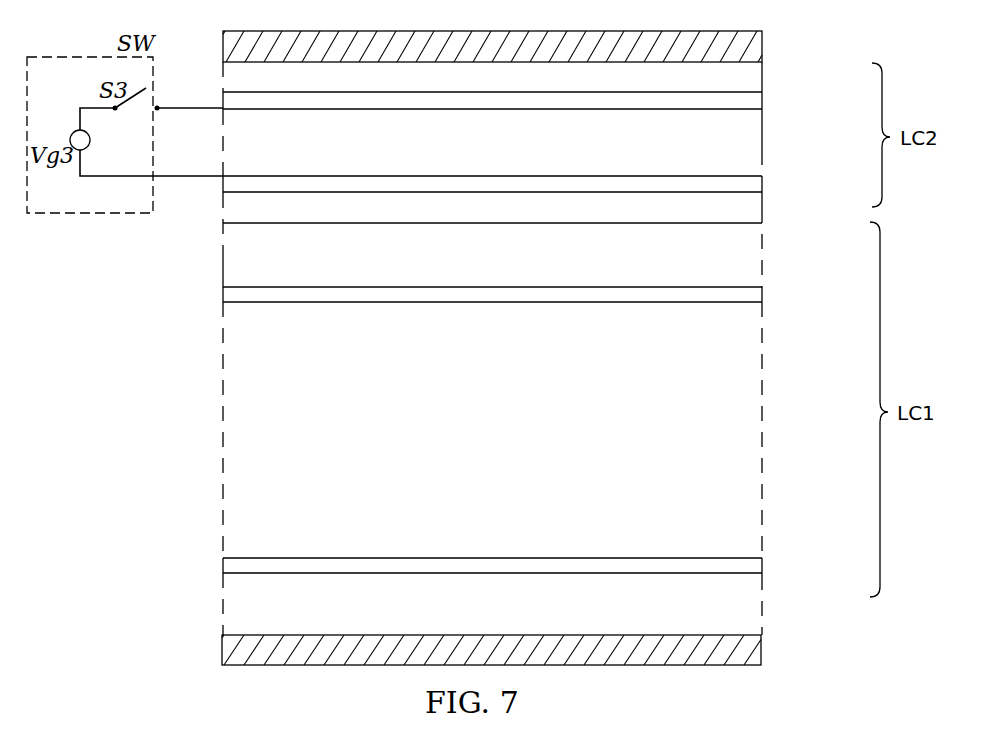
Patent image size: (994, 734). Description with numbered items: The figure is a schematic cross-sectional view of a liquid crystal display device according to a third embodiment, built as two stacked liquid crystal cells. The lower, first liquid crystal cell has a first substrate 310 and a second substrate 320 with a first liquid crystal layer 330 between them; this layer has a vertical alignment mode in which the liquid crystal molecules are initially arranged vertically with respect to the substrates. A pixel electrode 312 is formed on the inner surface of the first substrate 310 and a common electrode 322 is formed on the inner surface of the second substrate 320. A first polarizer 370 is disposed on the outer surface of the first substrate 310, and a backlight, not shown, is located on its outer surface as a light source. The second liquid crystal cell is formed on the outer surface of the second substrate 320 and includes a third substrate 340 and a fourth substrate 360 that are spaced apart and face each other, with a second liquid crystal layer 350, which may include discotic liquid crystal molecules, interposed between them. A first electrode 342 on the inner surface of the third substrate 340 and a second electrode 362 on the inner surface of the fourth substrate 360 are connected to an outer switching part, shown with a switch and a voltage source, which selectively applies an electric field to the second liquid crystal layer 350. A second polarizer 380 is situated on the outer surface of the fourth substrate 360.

The second polarizer 380 is at (752, 45).
The fourth substrate 360 is at (752, 83).
The second electrode 362 is at (752, 106).
The second liquid crystal layer 350 is at (752, 146).
The first electrode 342 is at (752, 188).
The third substrate 340 is at (752, 213).
The second substrate 320 is at (509, 267).
The common electrode 322 is at (752, 299).
The first liquid crystal layer 330 is at (752, 393).
The pixel electrode 312 is at (752, 570).
The first substrate 310 is at (507, 617).
The first polarizer 370 is at (752, 653).